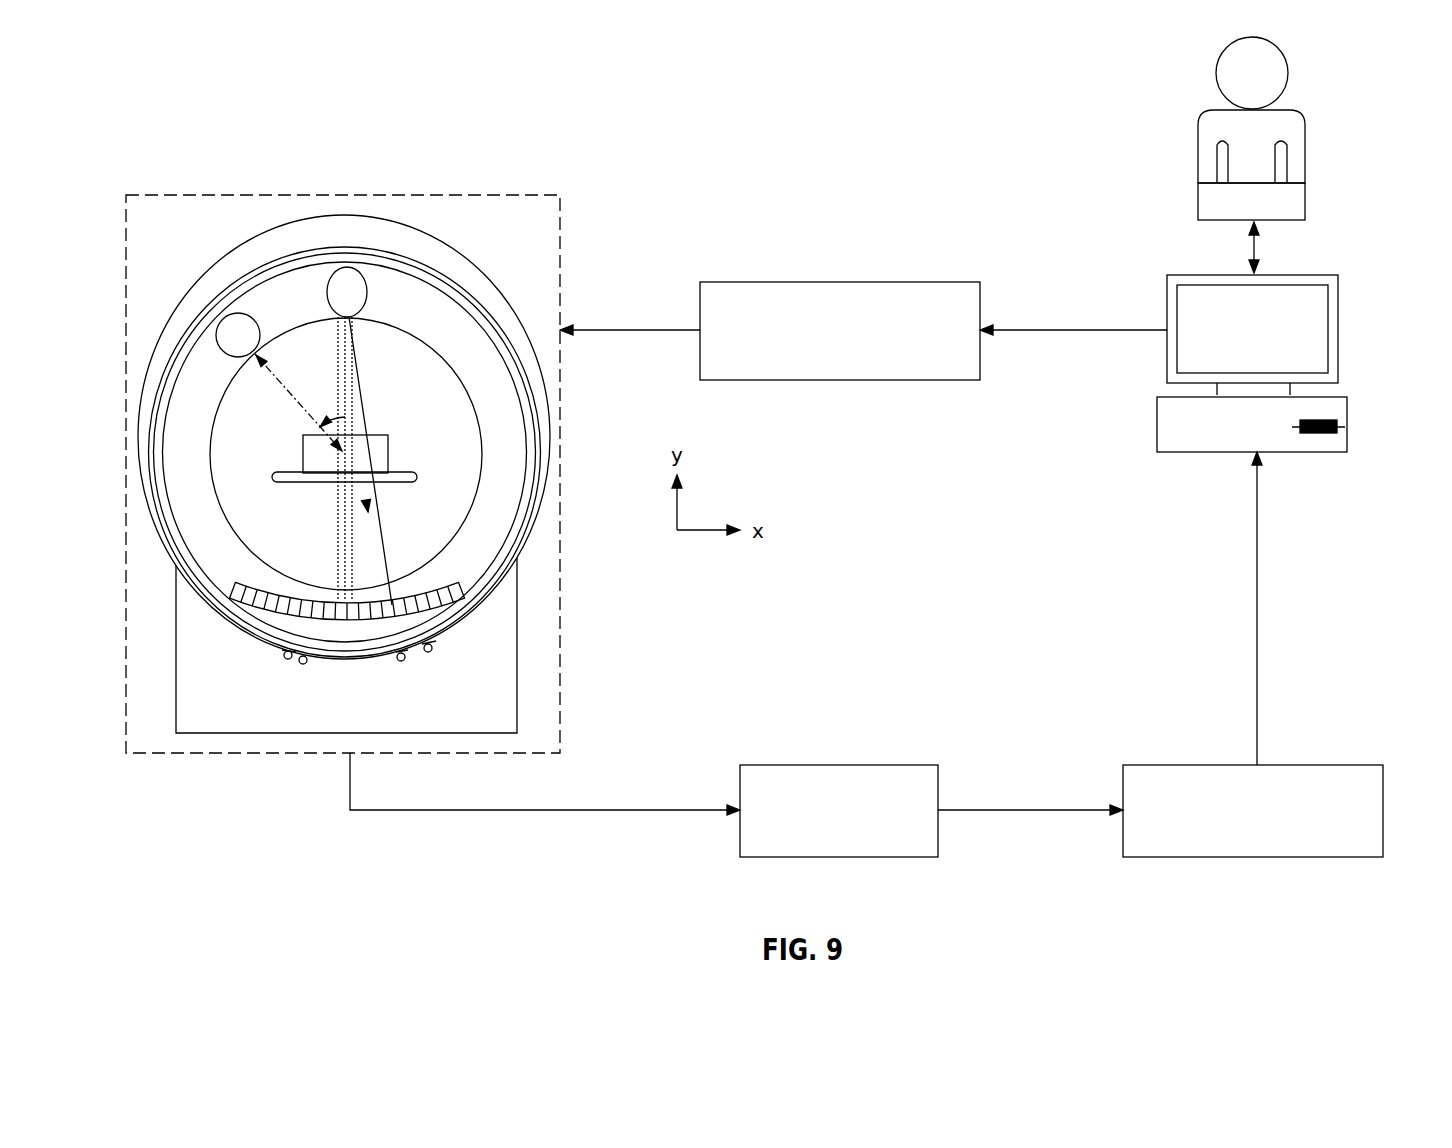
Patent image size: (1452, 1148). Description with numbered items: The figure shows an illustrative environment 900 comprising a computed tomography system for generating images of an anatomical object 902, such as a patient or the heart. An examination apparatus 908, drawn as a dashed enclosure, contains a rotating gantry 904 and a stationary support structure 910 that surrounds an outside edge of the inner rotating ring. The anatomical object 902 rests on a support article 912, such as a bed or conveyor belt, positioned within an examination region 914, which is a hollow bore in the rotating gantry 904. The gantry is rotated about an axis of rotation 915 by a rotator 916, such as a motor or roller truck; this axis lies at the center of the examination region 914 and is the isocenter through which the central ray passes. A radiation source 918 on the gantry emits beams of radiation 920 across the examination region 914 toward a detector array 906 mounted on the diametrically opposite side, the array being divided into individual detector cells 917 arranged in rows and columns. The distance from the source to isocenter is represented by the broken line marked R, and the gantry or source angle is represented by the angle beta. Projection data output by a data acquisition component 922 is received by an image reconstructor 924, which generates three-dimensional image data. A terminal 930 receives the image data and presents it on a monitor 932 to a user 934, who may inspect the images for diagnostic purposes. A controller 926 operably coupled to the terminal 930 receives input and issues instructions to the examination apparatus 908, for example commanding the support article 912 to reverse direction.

The illustrative environment 900 is at (217, 110).
The anatomical object 902 is at (368, 436).
The rotating gantry 904 is at (263, 267).
The detector array 906 is at (265, 606).
The examination apparatus 908 is at (560, 195).
The support structure 910 is at (460, 262).
The support article 912 is at (292, 476).
The examination region 914 is at (433, 528).
The axis of rotation 915 is at (372, 452).
The rotator 916 is at (436, 641).
The detector cells 917 is at (451, 582).
The radiation source 918 is at (365, 290).
The radiation 920 is at (340, 590).
The data acquisition component 922 is at (838, 857).
The image reconstructor 924 is at (1383, 765).
The controller 926 is at (838, 282).
The terminal 930 is at (1347, 397).
The monitor 932 is at (1338, 277).
The user 934 is at (1305, 120).